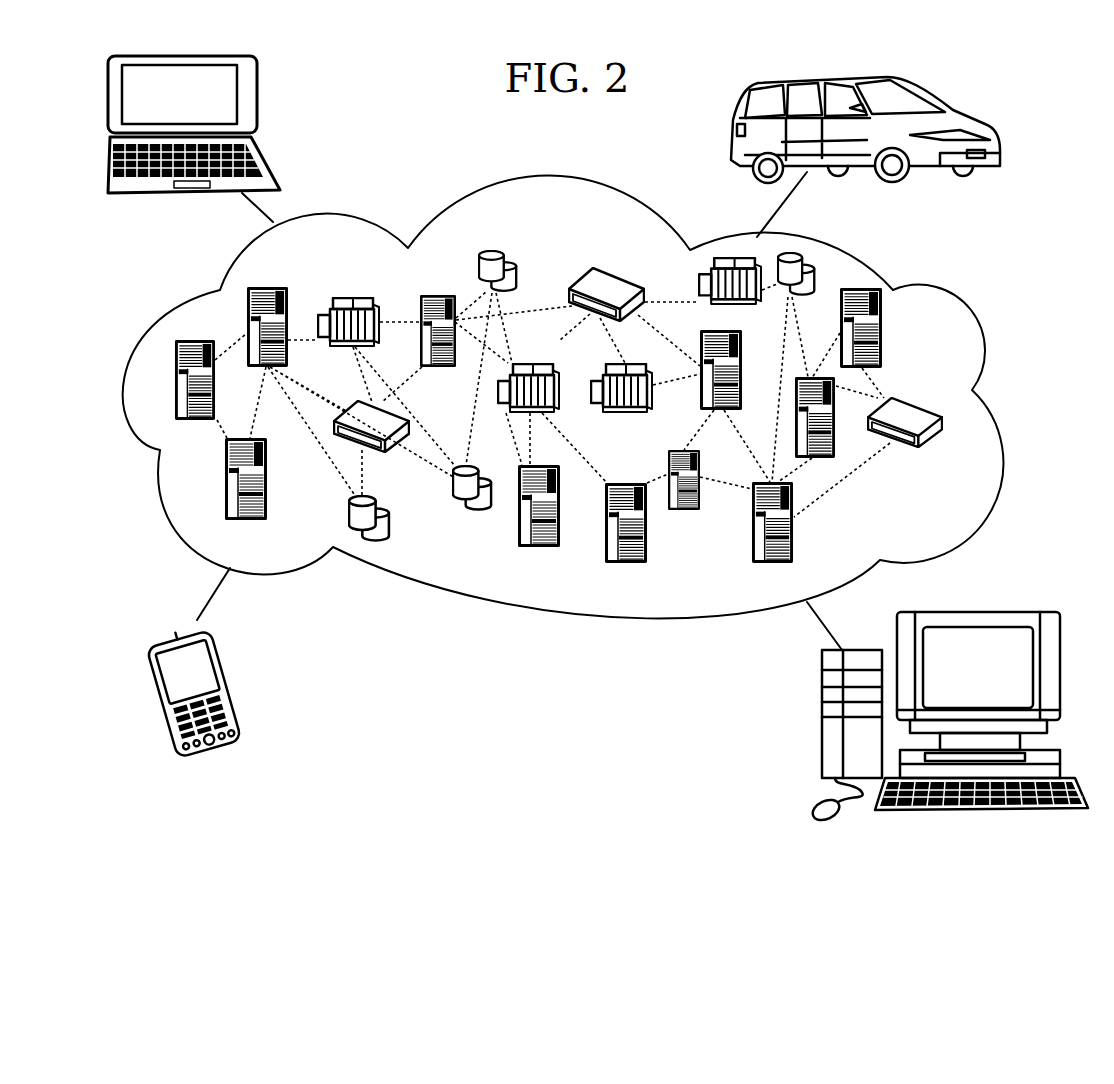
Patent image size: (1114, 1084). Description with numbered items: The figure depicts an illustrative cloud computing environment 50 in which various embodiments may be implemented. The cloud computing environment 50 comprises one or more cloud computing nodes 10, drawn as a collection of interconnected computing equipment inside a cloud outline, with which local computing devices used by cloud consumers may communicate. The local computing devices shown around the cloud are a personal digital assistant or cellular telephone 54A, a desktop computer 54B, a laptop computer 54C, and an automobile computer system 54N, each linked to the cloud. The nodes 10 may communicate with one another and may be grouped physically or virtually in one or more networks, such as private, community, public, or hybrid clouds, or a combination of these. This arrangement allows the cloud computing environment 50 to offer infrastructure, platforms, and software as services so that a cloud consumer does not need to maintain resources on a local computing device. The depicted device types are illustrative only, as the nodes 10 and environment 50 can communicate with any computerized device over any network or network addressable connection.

The cloud computing nodes 10 is at (976, 470).
The cloud computing environment 50 is at (481, 190).
The personal digital assistant (PDA) or cellular telephone 54A is at (236, 690).
The desktop computer 54B is at (1004, 610).
The laptop computer 54C is at (256, 117).
The automobile computer system 54N is at (953, 108).